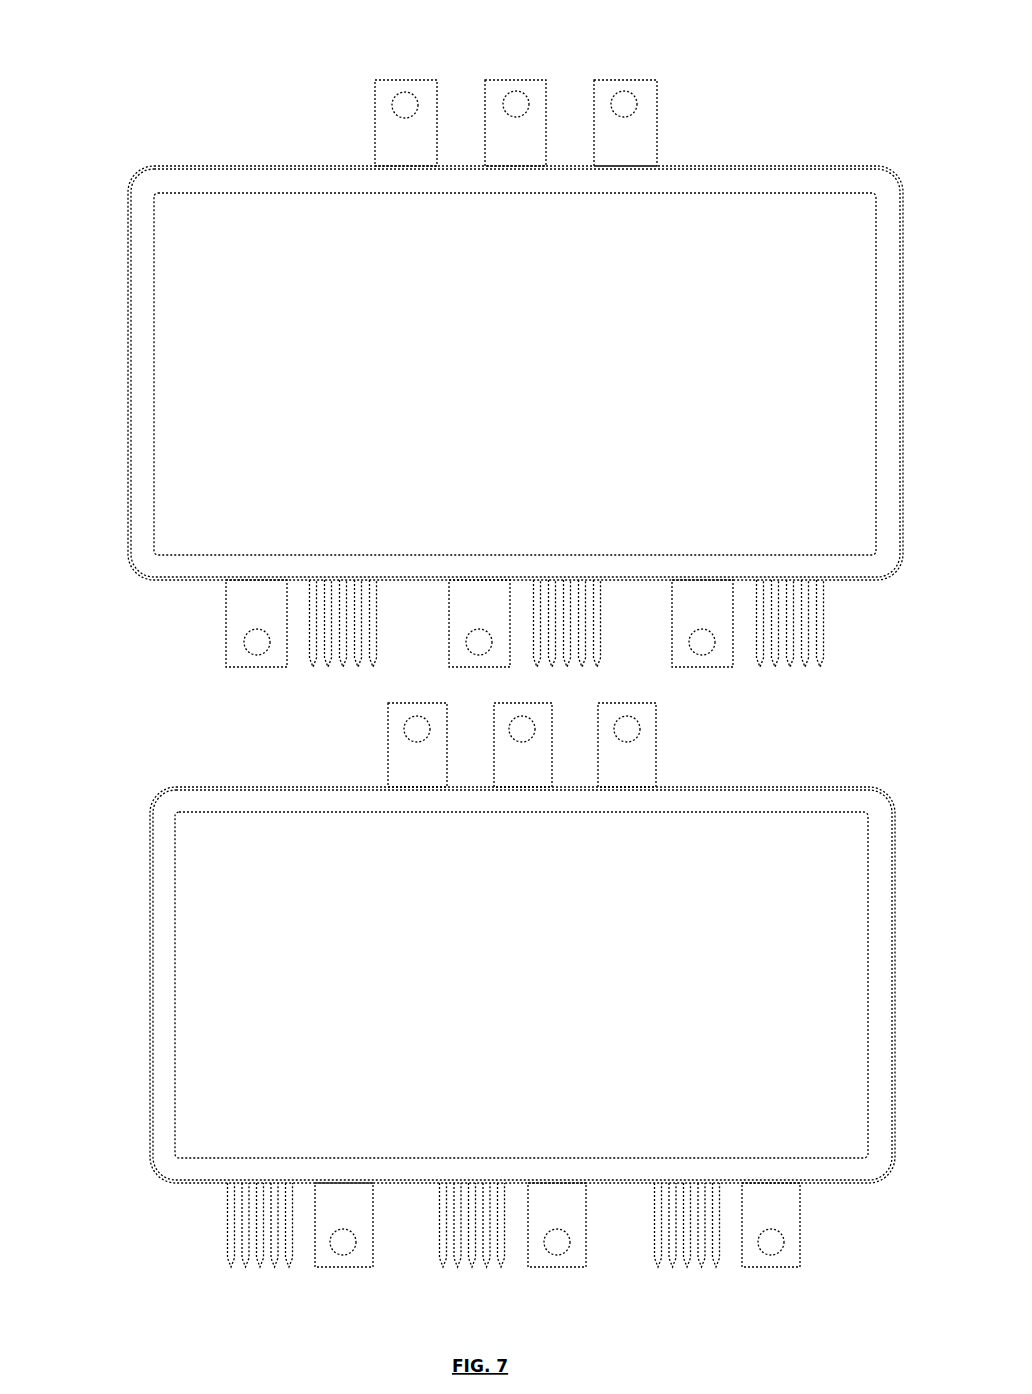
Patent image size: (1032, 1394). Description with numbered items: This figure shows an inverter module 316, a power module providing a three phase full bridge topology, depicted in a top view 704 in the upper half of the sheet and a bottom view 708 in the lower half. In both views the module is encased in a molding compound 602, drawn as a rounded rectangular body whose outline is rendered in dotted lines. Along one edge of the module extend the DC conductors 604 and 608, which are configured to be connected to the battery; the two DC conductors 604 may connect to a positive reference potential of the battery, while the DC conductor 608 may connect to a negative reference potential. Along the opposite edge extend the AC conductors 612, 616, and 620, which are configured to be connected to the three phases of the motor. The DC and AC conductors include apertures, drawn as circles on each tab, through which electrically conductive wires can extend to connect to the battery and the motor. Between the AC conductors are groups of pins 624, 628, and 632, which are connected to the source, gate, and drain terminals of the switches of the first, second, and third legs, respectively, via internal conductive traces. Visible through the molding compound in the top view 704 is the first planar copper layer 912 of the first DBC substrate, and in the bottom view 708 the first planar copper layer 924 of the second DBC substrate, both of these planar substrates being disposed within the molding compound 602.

The inverter module 316 is at (183, 107).
The molding compound 602 is at (143, 211).
The DC conductors 604 is at (387, 112).
The DC conductor 608 is at (503, 90).
The AC conductor 612 is at (241, 622).
The AC conductor 616 is at (480, 658).
The AC conductor 620 is at (718, 656).
The pins 624 is at (340, 678).
The pins 628 is at (580, 676).
The pins 632 is at (840, 658).
The top view 704 is at (475, 376).
The bottom view 708 is at (478, 1012).
The first planar copper layer 912 is at (808, 232).
The first planar copper layer 924 is at (837, 1145).